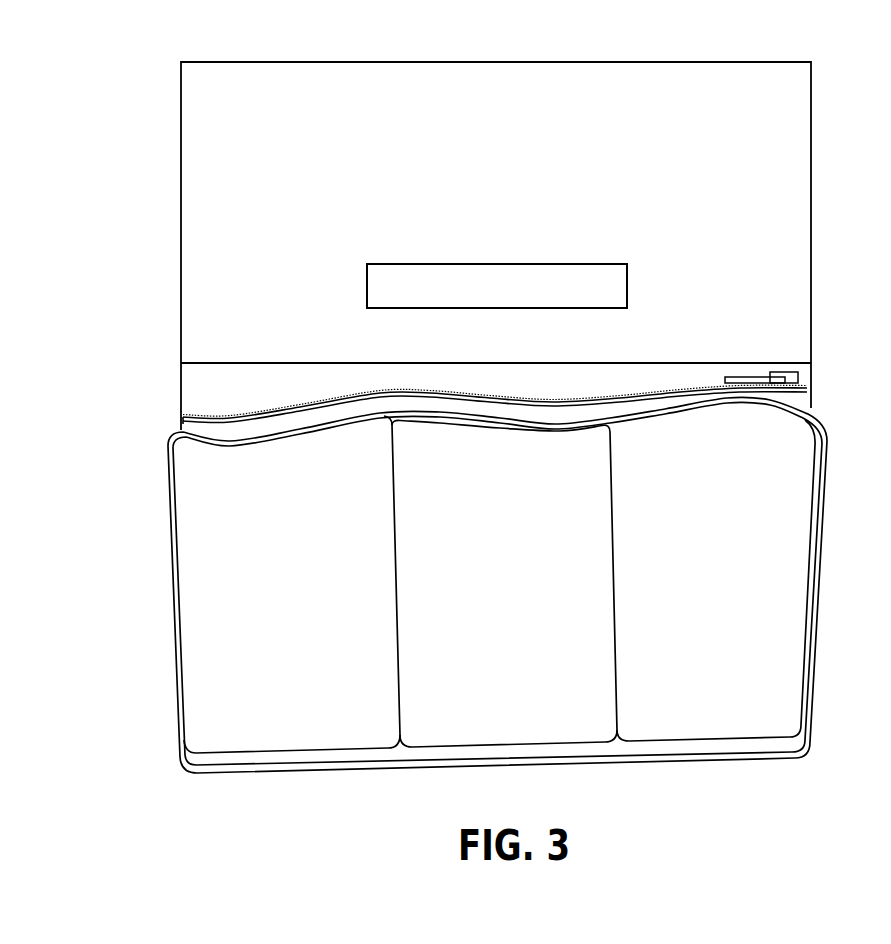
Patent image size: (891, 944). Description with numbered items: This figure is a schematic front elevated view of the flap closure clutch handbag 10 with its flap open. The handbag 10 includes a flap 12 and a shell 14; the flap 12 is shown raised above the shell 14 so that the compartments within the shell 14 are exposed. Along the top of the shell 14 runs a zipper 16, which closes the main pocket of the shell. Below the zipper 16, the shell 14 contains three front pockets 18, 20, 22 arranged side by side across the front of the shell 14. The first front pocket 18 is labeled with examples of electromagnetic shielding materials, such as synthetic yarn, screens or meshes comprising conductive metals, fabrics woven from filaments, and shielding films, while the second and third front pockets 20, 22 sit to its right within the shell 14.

The flap closure clutch handbag 10 is at (126, 482).
The flap 12 is at (811, 184).
The shell 14 is at (821, 517).
The zipper 16 is at (798, 378).
The front pocket 18 is at (292, 716).
The front pocket 20 is at (522, 688).
The front pocket 22 is at (728, 688).